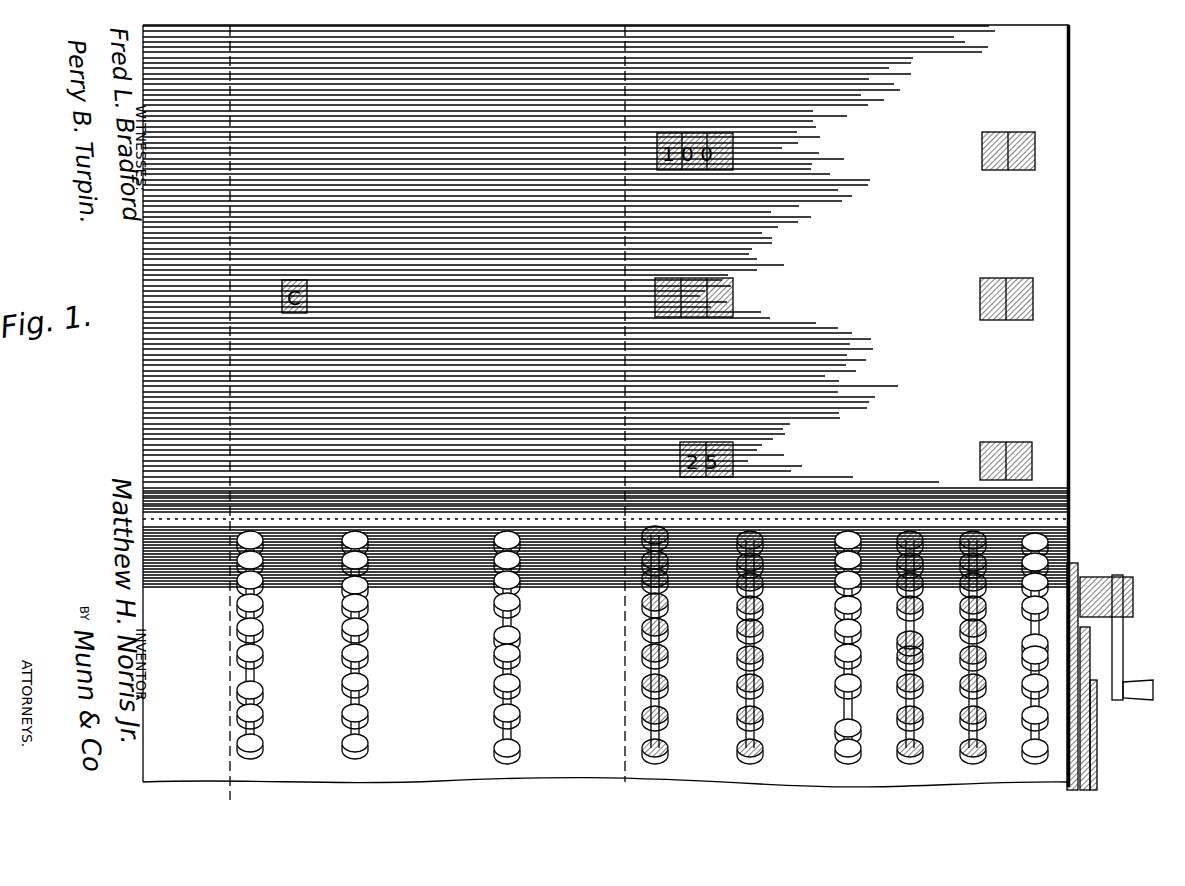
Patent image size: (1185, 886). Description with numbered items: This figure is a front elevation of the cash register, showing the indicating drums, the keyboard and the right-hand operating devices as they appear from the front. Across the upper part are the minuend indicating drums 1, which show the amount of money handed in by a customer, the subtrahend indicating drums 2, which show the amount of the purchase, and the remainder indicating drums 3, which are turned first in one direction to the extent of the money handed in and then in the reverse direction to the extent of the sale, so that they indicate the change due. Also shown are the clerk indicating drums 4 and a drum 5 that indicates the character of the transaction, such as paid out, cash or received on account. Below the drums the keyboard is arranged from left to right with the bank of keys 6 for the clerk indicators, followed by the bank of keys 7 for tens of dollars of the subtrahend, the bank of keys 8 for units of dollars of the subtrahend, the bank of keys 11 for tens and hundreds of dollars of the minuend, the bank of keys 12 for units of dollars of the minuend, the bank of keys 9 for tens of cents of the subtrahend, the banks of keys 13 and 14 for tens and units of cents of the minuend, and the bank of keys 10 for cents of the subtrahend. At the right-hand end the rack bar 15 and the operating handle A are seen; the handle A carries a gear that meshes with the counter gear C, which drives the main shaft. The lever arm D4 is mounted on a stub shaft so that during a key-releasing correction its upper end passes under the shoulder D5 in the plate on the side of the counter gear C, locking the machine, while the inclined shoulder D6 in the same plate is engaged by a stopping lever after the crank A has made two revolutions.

The minuend indicating drums 1 is at (980, 150).
The subtrahend indicating drums 2 is at (978, 298).
The remainder indicating drums 3 is at (978, 460).
The clerk indicating drums 4 is at (664, 278).
The transaction character drum 5 is at (232, 795).
The bank of keys 6 is at (250, 667).
The bank of keys 7 is at (355, 667).
The bank of keys 8 is at (507, 667).
The bank of keys 9 is at (848, 667).
The bank of keys 10 is at (1035, 668).
The bank of keys 11 is at (655, 664).
The bank of keys 12 is at (750, 667).
The bank of keys 13 is at (910, 667).
The bank of keys 14 is at (973, 667).
The rack bar 15 is at (1070, 552).
The operating handle A is at (1130, 682).
The counter gear C is at (1091, 655).
The lever arm D4 is at (1098, 768).
The shoulder D5 is at (1092, 732).
The inclined shoulder D6 is at (1090, 670).